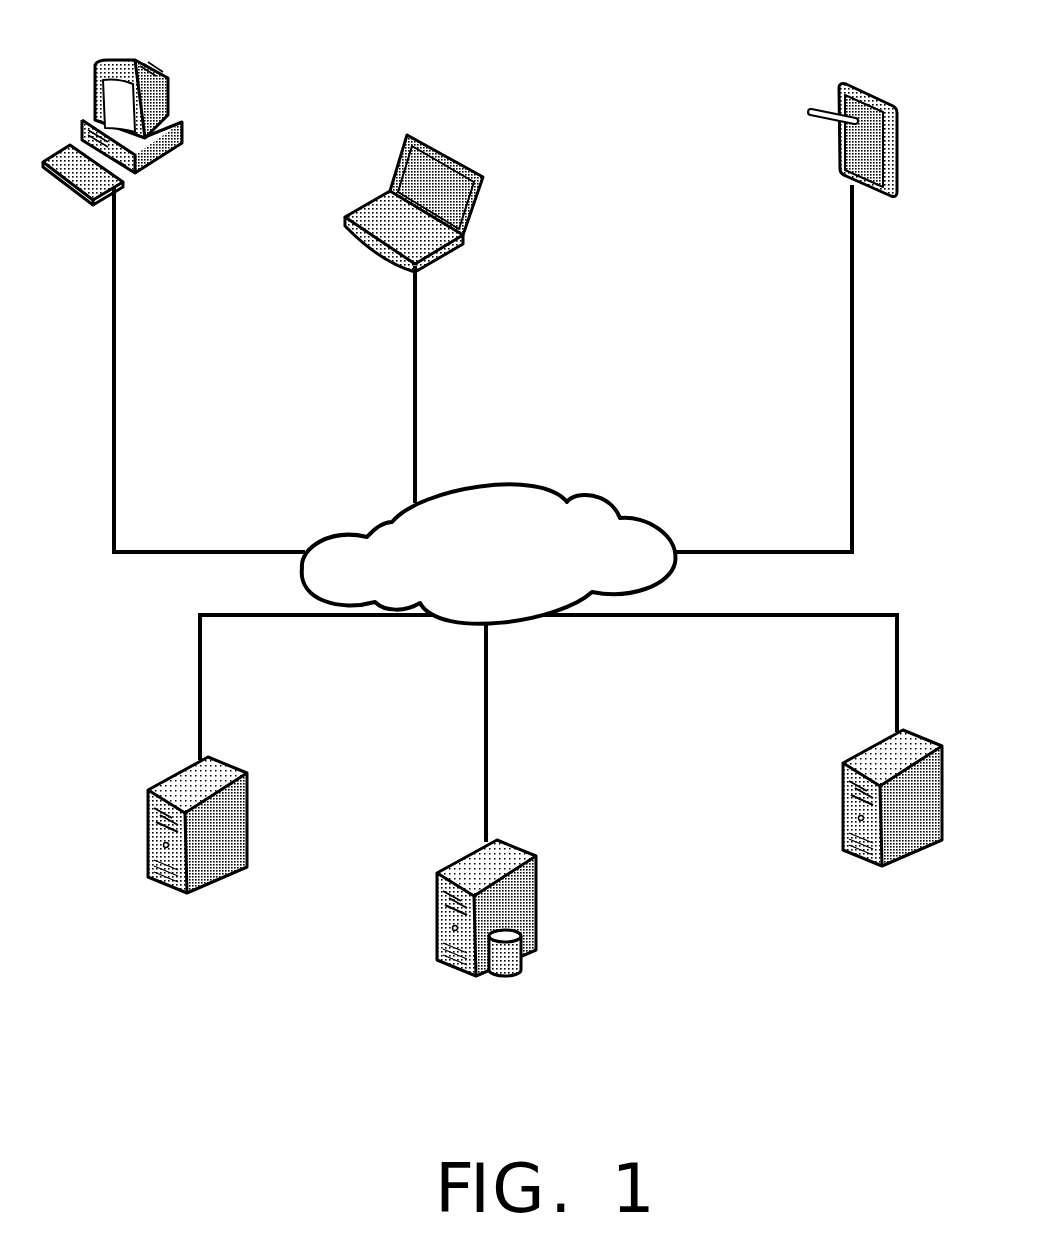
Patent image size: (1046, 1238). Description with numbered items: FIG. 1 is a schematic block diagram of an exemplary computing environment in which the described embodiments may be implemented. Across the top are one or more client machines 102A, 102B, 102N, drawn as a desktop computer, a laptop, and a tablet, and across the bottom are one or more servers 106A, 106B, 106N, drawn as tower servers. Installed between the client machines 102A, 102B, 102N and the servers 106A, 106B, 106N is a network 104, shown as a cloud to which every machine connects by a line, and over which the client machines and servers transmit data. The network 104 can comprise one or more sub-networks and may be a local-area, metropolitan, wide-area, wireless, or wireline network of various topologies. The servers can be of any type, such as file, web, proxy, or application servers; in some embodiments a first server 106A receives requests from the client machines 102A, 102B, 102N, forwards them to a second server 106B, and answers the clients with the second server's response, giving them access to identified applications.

The client machine 102A is at (160, 80).
The client machine 102B is at (445, 150).
The client machine 102N is at (863, 97).
The network 104 is at (489, 553).
The first server 106A is at (187, 893).
The second server 106B is at (473, 977).
The server 106N is at (910, 853).